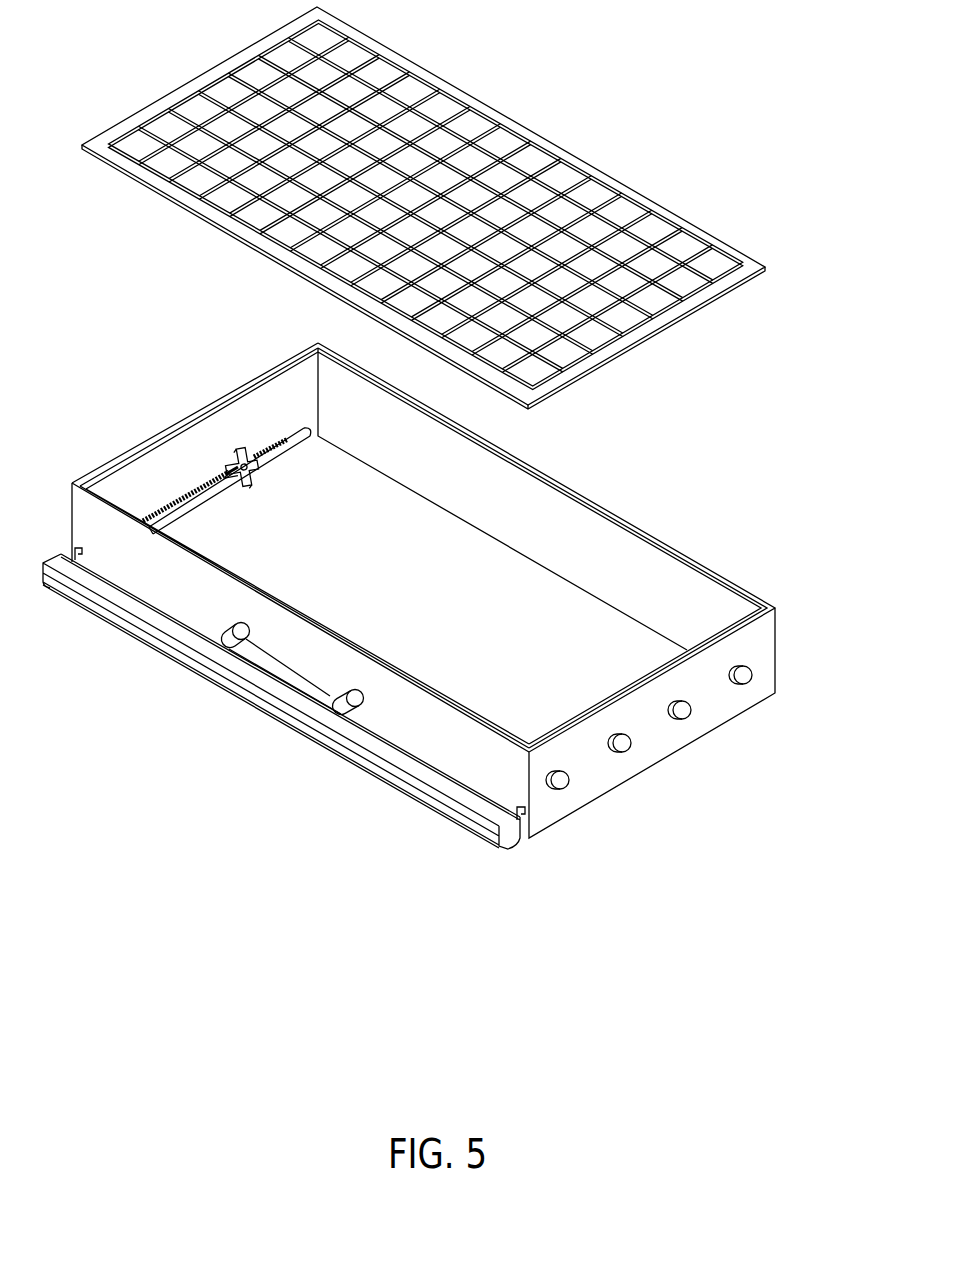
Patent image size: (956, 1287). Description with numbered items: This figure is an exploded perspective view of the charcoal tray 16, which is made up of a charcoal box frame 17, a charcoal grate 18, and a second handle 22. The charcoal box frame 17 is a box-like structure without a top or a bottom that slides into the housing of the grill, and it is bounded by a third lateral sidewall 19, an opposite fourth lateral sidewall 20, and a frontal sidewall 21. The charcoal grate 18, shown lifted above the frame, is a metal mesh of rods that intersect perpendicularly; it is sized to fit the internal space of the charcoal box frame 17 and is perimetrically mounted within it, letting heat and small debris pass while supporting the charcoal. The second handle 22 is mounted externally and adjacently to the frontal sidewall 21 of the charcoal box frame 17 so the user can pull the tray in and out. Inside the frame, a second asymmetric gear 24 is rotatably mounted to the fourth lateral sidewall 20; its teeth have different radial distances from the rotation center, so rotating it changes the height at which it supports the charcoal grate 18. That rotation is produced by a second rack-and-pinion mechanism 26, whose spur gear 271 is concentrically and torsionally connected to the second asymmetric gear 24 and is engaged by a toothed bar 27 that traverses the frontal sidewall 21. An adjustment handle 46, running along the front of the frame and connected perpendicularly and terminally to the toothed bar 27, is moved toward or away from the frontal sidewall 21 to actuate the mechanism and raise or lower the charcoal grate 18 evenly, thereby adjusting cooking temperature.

The charcoal tray 16 is at (440, 660).
The charcoal box frame 17 is at (762, 698).
The charcoal grate 18 is at (142, 119).
The third lateral sidewall 19 is at (654, 760).
The fourth lateral sidewall 20 is at (132, 458).
The frontal sidewall 21 is at (292, 627).
The second handle 22 is at (362, 702).
The second asymmetric gear 24 is at (252, 476).
The second rack-and-pinion mechanism 26 is at (268, 435).
The toothed bar 27 is at (193, 503).
The spur gear 271 is at (228, 460).
The adjustment handle 46 is at (251, 697).